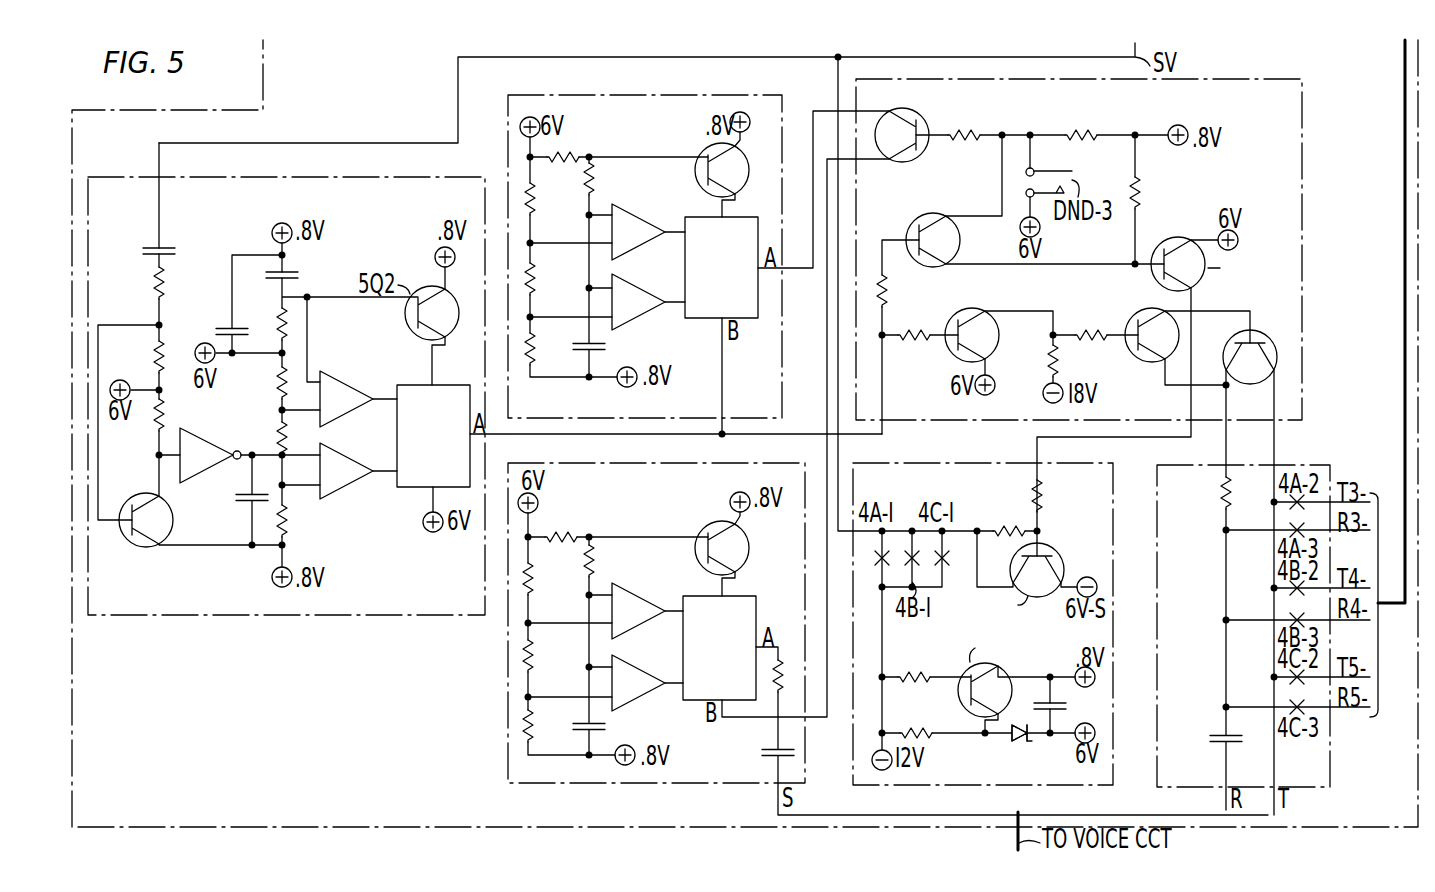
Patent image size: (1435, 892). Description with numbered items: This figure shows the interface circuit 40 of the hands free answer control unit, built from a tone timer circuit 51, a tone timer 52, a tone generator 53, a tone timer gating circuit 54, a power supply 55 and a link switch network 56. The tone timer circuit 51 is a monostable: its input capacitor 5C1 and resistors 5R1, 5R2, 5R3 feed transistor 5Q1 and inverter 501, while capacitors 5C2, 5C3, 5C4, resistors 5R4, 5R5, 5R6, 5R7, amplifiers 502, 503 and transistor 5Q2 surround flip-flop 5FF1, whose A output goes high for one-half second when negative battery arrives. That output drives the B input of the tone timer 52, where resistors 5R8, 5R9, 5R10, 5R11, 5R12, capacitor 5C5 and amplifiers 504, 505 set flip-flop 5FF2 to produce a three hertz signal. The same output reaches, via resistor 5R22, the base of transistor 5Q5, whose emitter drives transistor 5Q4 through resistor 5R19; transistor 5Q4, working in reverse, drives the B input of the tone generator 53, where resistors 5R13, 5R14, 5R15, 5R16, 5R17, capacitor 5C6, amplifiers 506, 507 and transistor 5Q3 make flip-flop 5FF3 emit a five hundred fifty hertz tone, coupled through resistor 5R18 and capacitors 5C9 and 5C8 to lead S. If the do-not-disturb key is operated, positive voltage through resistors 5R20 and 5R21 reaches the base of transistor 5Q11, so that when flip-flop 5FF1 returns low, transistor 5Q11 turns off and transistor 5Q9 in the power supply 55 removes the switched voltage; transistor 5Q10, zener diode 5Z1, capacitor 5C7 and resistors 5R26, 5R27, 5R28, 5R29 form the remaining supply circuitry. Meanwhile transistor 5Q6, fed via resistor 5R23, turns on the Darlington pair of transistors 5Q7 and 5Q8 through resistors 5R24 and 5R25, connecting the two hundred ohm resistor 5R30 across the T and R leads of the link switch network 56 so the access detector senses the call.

The interface circuit 40 is at (347, 774).
The tone timer circuit 51 is at (366, 177).
The tone timer 52 is at (668, 93).
The tone generator 53 is at (780, 463).
The tone timer gating circuit 54 is at (1240, 80).
The power supply 55 is at (960, 467).
The link switch network 56 is at (1305, 466).
The inverter 501 is at (190, 480).
The amplifier 502 is at (343, 412).
The amplifier 503 is at (340, 486).
The amplifier 504 is at (645, 240).
The amplifier 505 is at (640, 312).
The amplifier 506 is at (642, 620).
The amplifier 507 is at (642, 692).
The flip-flop 5FF1 is at (410, 384).
The flip-flop 5FF2 is at (700, 216).
The flip-flop 5FF3 is at (700, 596).
The capacitor 5C1 is at (150, 250).
The capacitor 5C2 is at (303, 276).
The capacitor 5C3 is at (220, 334).
The capacitor 5C4 is at (246, 497).
The capacitor 5C5 is at (606, 345).
The capacitor 5C6 is at (607, 728).
The capacitor 5C7 is at (1070, 704).
The capacitor 5C8 is at (1206, 741).
The capacitor 5C9 is at (758, 754).
The resistor 5R1 is at (141, 284).
The resistor 5R2 is at (138, 357).
The resistor 5R3 is at (179, 414).
The resistor 5R4 is at (262, 318).
The resistor 5R5 is at (261, 385).
The resistor 5R6 is at (261, 436).
The resistor 5R7 is at (303, 521).
The resistor 5R8 is at (566, 148).
The resistor 5R9 is at (610, 180).
The resistor 5R10 is at (553, 201).
The resistor 5R11 is at (550, 280).
The resistor 5R12 is at (552, 346).
The resistor 5R13 is at (565, 522).
The resistor 5R14 is at (551, 586).
The resistor 5R15 is at (611, 564).
The resistor 5R16 is at (551, 656).
The resistor 5R17 is at (552, 729).
The resistor 5R18 is at (772, 700).
The resistor 5R19 is at (965, 150).
The resistor 5R20 is at (1086, 122).
The resistor 5R21 is at (1158, 193).
The resistor 5R22 is at (907, 290).
The resistor 5R23 is at (916, 350).
The resistor 5R24 is at (1091, 321).
The resistor 5R25 is at (1079, 361).
The resistor 5R26 is at (1063, 494).
The resistor 5R27 is at (1001, 517).
The resistor 5R28 is at (918, 662).
The resistor 5R29 is at (921, 720).
The resistor 5R30 is at (1200, 493).
The transistor 5Q1 is at (136, 535).
The transistor 5Q2 is at (700, 147).
The transistor 5Q3 is at (700, 530).
The transistor 5Q4 is at (910, 108).
The transistor 5Q5 is at (938, 216).
The transistor 5Q6 is at (963, 310).
The transistor 5Q7 is at (1145, 310).
The transistor 5Q8 is at (1248, 332).
The transistor 5Q9 is at (1024, 583).
The transistor 5Q10 is at (990, 675).
The transistor 5Q11 is at (1205, 264).
The zener diode 5Z1 is at (1017, 747).